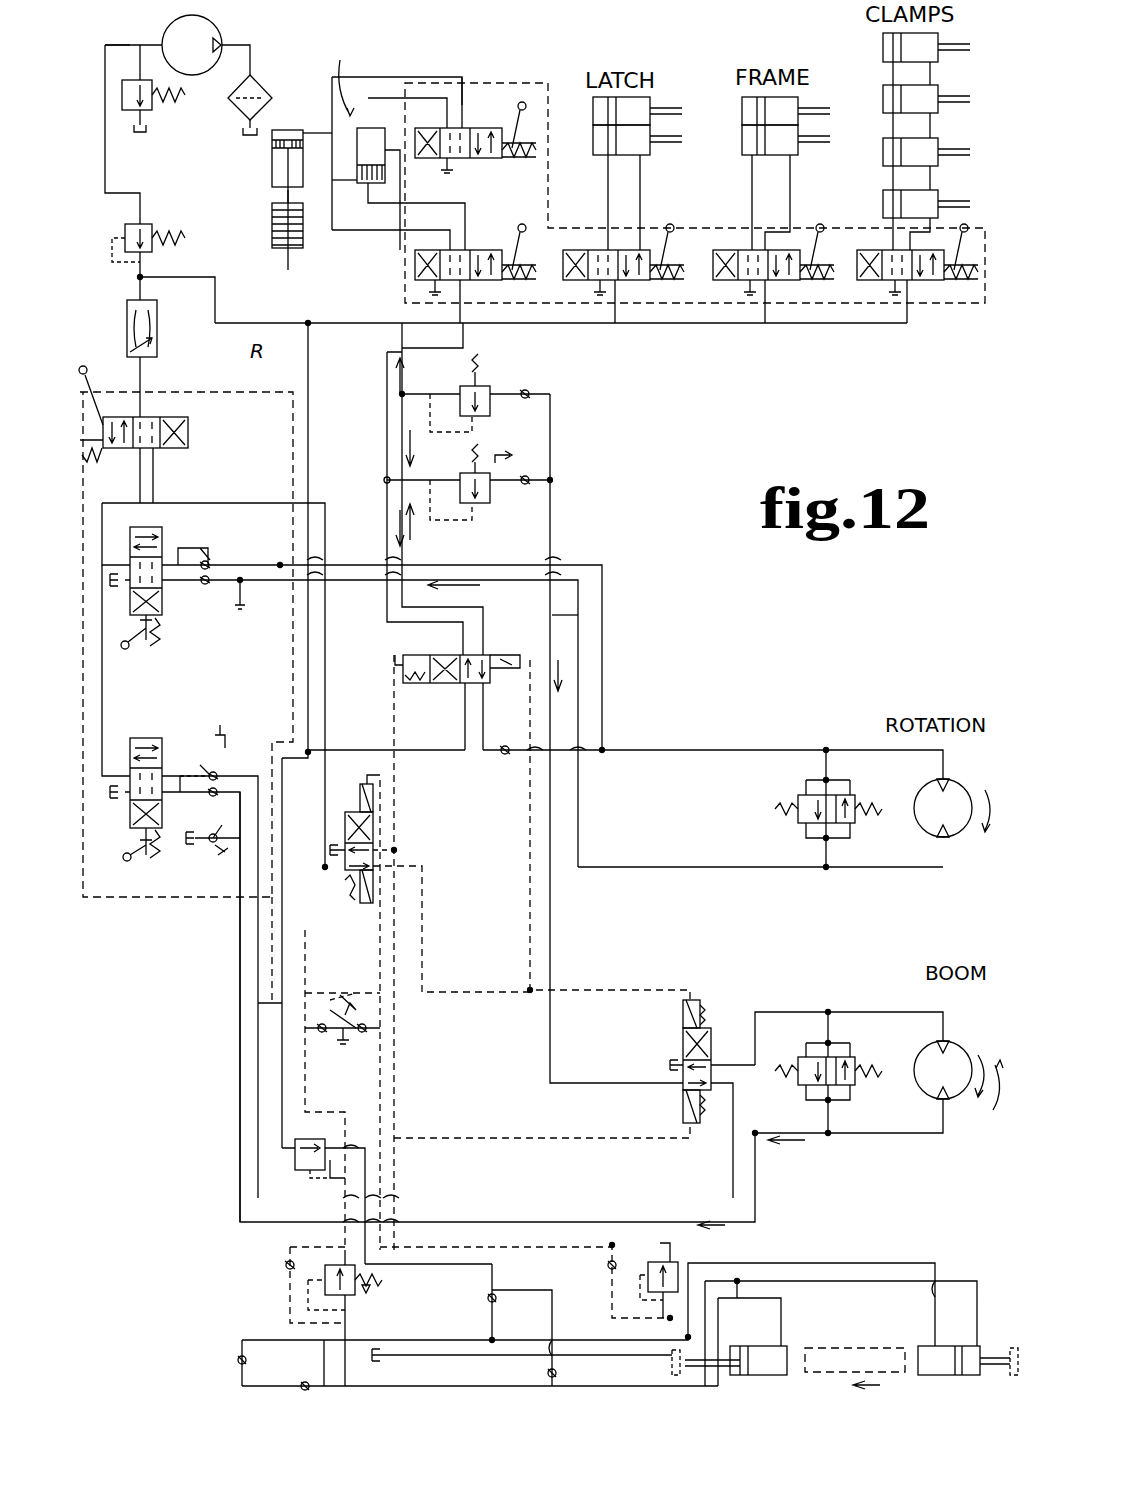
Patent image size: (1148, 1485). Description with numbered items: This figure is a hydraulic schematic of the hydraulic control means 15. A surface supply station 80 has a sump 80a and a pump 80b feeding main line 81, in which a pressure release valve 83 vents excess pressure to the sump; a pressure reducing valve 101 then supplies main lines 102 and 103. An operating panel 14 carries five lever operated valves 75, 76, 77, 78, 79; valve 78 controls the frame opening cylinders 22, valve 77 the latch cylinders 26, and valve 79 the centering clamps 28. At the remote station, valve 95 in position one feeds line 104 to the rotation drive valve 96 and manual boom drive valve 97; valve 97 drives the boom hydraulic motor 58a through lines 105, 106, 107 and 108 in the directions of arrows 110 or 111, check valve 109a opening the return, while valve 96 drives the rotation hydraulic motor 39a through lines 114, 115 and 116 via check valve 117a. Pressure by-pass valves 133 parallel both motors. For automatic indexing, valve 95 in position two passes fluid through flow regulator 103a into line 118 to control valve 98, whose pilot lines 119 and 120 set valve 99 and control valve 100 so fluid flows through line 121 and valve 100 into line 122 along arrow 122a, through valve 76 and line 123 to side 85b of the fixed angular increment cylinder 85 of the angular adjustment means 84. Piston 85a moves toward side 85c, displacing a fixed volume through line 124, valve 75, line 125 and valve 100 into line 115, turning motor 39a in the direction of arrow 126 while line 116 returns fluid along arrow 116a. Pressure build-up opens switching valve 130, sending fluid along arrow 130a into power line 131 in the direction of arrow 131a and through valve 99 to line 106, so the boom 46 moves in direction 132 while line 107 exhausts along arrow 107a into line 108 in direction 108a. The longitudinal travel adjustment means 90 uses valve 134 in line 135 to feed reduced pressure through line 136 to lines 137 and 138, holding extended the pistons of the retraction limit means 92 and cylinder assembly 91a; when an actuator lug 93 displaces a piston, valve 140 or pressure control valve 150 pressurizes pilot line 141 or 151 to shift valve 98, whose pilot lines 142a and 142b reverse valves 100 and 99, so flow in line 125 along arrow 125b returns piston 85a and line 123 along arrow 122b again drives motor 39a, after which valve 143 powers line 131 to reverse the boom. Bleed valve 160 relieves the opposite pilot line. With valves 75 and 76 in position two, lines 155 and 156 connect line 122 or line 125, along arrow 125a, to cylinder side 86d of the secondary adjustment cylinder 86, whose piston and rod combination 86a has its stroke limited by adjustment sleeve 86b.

The surface supply station 80 is at (230, 40).
The supply hydraulic pump 80b is at (165, 40).
The main line 81 is at (105, 160).
The surface pressure release valve 83 is at (152, 105).
The sump 80a is at (233, 120).
The pressure reducing valve 101 is at (125, 230).
The main line 102 is at (170, 285).
The main line 103 is at (127, 298).
The flow regulator 103a is at (127, 345).
The secondary hydraulic cylinder 86 is at (270, 178).
The piston and rod combination 86a is at (285, 128).
The cylinder side 86d is at (272, 200).
The adjustment sleeve 86b is at (270, 250).
The first hydraulic cylinder 85 is at (372, 128).
The piston 85a is at (357, 168).
The cylinder side 85b is at (357, 183).
The cylinder side 85c is at (336, 72).
The angular adjustment means 84 is at (358, 95).
The line 124 is at (430, 85).
The line 156 is at (470, 110).
The line 155 is at (372, 245).
The line 123 is at (440, 215).
The operating valve 75 is at (480, 128).
The operating valve 76 is at (470, 295).
The operator valve 77 is at (575, 280).
The operator valve 78 is at (735, 280).
The operator valve 79 is at (878, 280).
The hydraulic cylinders 26 is at (593, 110).
The frame opening cylinders 22 is at (742, 110).
The centering clamps 28 is at (883, 45).
The operating panel 14 is at (660, 323).
The line 104 is at (100, 450).
The valve 95 is at (190, 425).
The line 118 is at (205, 503).
The rotation drive valve 96 is at (162, 612).
The manual boom drive valve 97 is at (148, 738).
The check valve 117a is at (230, 625).
The check valve 109a is at (208, 855).
The line 122 is at (387, 440).
The arrow 122a is at (392, 372).
The arrow 122b is at (392, 520).
The line 125 is at (402, 375).
The arrow 125a is at (413, 440).
The arrow 125b is at (413, 535).
The valve 143 is at (485, 382).
The arrow 130a is at (493, 450).
The switching valve 130 is at (485, 508).
The line 114 is at (580, 562).
The power line 131 is at (560, 615).
The arrow 131a is at (560, 665).
The arrow 116a is at (475, 585).
The control valve 100 is at (483, 655).
The line 121 is at (420, 748).
The line 115 is at (700, 750).
The line 116 is at (690, 867).
The hydraulic control means 15 is at (744, 663).
The pressure by-pass valves 133 is at (806, 785).
The rotation hydraulic motor 39a is at (948, 782).
The arrow 126 is at (990, 820).
The control valve 98 is at (373, 830).
The pilot line 142a is at (396, 800).
The pilot line 119 is at (435, 990).
The pilot line 120 is at (530, 878).
The pilot line 142b is at (432, 1135).
The pilot line 141 is at (382, 1085).
The pilot line 151 is at (305, 935).
The pilot line bleed valve 160 is at (382, 1030).
The line 135 is at (268, 1003).
The line 105 is at (258, 1065).
The line 108 is at (240, 1152).
The valve 134 is at (295, 1170).
The control valve 99 is at (705, 1010).
The line 106 is at (760, 1012).
The line 107 is at (885, 1133).
The arrow 107a is at (785, 1142).
The direction 108a is at (722, 1228).
The boom hydraulic motor 58a is at (948, 1042).
The arrow 110 is at (985, 1050).
The arrow 111 is at (993, 1110).
The longitudinal travel adjustment means 90 is at (815, 1237).
The line 136 is at (400, 1264).
The pressure control valve 150 is at (350, 1295).
The line 137 is at (515, 1337).
The line 138 is at (575, 1386).
The valve 140 is at (650, 1252).
The hydraulic cylinder assembly 91a is at (735, 1375).
The adjustable actuator lug 93 is at (672, 1362).
The retraction limit means 92 is at (928, 1334).
The boom 46 is at (838, 1372).
The direction 132 is at (882, 1388).